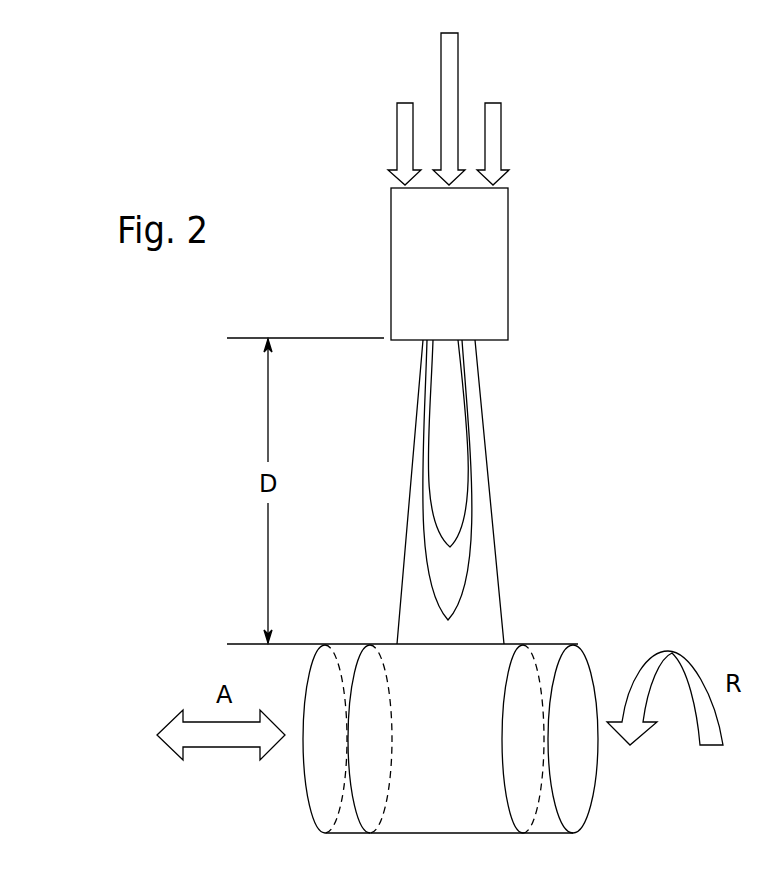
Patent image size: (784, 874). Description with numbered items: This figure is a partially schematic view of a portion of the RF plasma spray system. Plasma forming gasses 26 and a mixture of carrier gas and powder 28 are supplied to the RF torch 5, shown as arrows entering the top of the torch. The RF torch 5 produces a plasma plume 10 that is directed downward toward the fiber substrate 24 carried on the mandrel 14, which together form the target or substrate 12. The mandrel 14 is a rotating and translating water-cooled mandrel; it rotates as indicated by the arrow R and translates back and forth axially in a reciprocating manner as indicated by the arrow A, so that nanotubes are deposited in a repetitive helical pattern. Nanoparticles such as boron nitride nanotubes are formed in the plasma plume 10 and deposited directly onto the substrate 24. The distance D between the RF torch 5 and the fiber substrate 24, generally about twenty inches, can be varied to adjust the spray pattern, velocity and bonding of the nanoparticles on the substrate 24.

The RF torch 5 is at (508, 260).
The plasma plume 10 is at (490, 455).
The target or substrate 12 is at (550, 644).
The mandrel 14 is at (587, 653).
The fiber substrate 24 is at (420, 822).
The plasma forming gasses 26 is at (501, 130).
The mixture of carrier gas and powder 28 is at (458, 82).